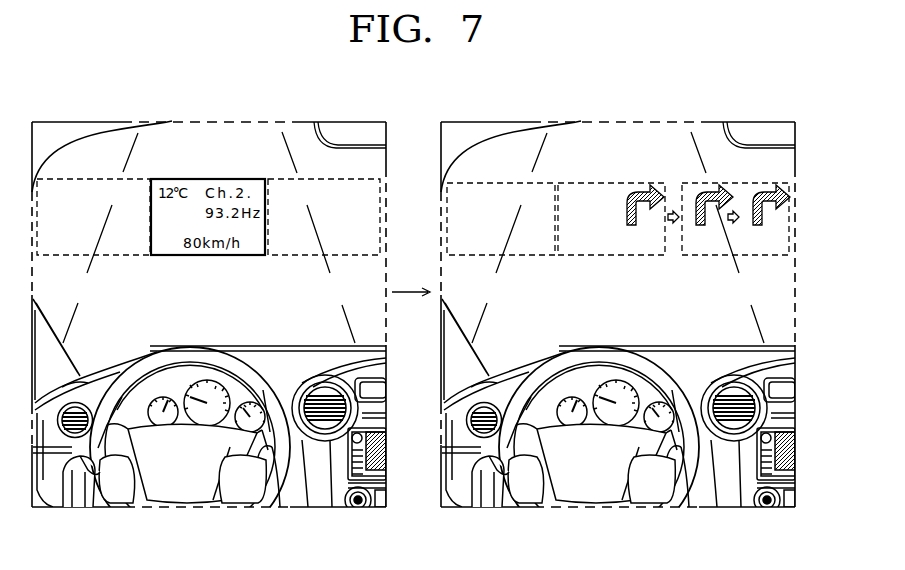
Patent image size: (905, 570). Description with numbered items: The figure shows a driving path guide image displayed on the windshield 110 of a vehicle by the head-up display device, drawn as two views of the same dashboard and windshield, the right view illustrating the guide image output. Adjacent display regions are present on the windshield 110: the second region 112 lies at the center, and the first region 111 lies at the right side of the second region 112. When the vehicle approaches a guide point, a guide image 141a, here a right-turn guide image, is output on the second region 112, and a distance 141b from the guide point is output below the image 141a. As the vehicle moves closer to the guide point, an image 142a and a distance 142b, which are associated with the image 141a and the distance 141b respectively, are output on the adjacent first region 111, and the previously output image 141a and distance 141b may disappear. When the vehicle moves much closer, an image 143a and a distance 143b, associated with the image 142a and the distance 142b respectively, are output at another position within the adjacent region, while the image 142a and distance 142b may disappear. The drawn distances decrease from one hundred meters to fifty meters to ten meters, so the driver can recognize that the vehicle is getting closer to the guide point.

The windshield 110 is at (77, 167).
The first region 111 is at (692, 180).
The second region 112 is at (573, 175).
The guide image 141a is at (640, 190).
The distance 141b is at (622, 242).
The image 142a is at (716, 188).
The distance 142b is at (702, 246).
The image 143a is at (765, 188).
The distance 143b is at (760, 246).